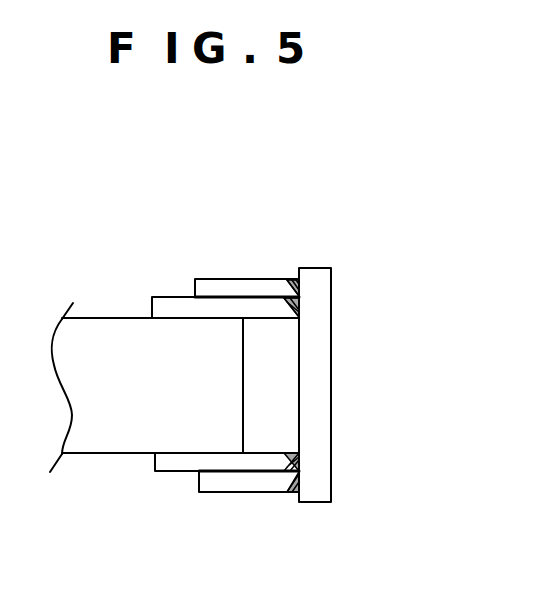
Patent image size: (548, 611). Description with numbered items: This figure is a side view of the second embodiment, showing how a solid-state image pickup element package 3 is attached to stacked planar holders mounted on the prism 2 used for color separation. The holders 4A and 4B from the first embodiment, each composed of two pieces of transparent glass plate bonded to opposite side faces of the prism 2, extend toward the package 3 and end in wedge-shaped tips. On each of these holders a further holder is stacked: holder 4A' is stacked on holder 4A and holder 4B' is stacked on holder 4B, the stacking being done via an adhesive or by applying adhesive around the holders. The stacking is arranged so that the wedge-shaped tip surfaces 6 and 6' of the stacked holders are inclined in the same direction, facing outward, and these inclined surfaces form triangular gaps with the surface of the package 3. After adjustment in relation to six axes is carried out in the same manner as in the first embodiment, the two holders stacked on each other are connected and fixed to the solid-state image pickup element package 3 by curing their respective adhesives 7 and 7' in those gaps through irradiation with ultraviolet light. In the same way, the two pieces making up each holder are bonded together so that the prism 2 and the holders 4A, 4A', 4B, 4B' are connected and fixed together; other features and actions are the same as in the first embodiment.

The prism 2 is at (93, 318).
The solid-state image pickup element package 3 is at (331, 322).
The holder 4A is at (216, 256).
The stacked holder 4A' is at (241, 245).
The holder 4B is at (225, 520).
The stacked holder 4B' is at (249, 529).
The wedge-shaped tip surface 6 is at (292, 443).
The wedge-shaped tip surface 6' is at (274, 391).
The adhesive 7 is at (324, 249).
The adhesive 7' is at (299, 239).